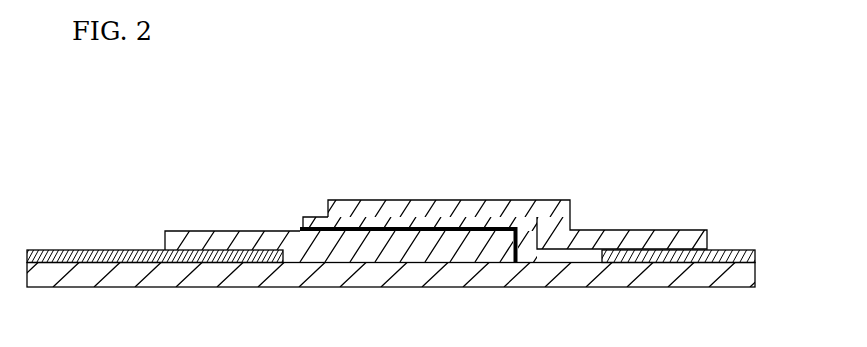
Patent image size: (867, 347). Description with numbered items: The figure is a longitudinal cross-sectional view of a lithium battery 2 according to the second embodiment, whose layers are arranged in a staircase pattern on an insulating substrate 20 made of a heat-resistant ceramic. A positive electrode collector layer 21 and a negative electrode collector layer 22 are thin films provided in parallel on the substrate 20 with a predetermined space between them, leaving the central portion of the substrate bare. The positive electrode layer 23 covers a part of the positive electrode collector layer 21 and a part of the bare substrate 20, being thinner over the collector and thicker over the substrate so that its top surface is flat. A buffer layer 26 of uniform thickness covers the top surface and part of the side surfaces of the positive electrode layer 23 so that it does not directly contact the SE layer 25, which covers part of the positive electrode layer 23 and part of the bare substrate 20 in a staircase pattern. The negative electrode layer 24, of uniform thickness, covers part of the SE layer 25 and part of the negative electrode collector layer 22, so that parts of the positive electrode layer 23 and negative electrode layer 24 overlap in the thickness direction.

The battery 2 is at (412, 183).
The insulating substrate 20 is at (682, 280).
The positive electrode collector layer 21 is at (100, 250).
The negative electrode collector layer 22 is at (742, 249).
The positive electrode layer 23 is at (232, 232).
The negative electrode layer 24 is at (558, 200).
The SE layer 25 is at (315, 217).
The buffer layer 26 is at (494, 227).